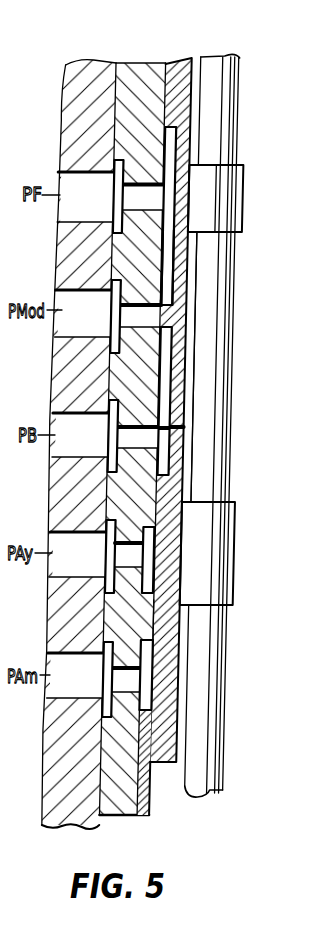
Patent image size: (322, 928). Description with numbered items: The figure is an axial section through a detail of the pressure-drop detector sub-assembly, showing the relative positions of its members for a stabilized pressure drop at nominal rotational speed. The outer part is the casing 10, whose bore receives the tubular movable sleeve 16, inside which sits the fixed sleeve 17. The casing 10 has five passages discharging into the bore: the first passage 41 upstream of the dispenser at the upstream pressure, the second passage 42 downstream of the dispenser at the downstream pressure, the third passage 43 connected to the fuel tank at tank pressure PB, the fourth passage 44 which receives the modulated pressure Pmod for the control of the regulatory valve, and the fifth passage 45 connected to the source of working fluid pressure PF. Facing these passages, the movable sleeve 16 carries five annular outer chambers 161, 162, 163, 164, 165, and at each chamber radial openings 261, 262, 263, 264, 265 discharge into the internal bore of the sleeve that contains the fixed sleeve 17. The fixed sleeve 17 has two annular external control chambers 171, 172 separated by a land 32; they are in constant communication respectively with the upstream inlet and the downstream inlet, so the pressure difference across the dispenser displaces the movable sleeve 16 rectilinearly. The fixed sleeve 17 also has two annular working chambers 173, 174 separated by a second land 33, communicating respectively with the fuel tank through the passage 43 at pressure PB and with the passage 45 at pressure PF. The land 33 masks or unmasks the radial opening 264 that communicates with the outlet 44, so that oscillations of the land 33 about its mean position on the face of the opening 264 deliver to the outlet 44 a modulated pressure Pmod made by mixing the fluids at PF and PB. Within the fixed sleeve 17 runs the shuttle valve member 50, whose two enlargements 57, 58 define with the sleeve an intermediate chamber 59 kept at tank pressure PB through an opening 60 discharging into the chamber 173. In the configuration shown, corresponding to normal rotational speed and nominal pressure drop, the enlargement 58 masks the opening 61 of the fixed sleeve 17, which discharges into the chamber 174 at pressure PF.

The casing 10 is at (72, 77).
The movable sleeve 16 is at (129, 62).
The fixed sleeve 17 is at (178, 62).
The land 32 is at (146, 622).
The second land 33 is at (174, 310).
The first passage 41 is at (43, 698).
The second passage 42 is at (48, 568).
The third passage 43 is at (52, 450).
The fourth passage 44 is at (60, 327).
The fifth passage 45 is at (66, 211).
The shuttle valve member 50 is at (226, 107).
The enlargement 57 is at (226, 533).
The enlargement 58 is at (233, 197).
The intermediate chamber 59 is at (189, 418).
The opening 60 is at (178, 440).
The opening 61 is at (189, 192).
The annular outer chamber 161 is at (102, 660).
The annular outer chamber 162 is at (108, 558).
The annular outer chamber 163 is at (108, 420).
The annular outer chamber 164 is at (111, 300).
The annular outer chamber 165 is at (116, 185).
The control chamber 171 is at (148, 692).
The control chamber 172 is at (151, 543).
The working chamber 173 is at (164, 373).
The working chamber 174 is at (168, 267).
The radial opening 261 is at (108, 716).
The radial opening 262 is at (132, 559).
The radial opening 263 is at (124, 456).
The radial opening 264 is at (133, 322).
The radial opening 265 is at (138, 203).